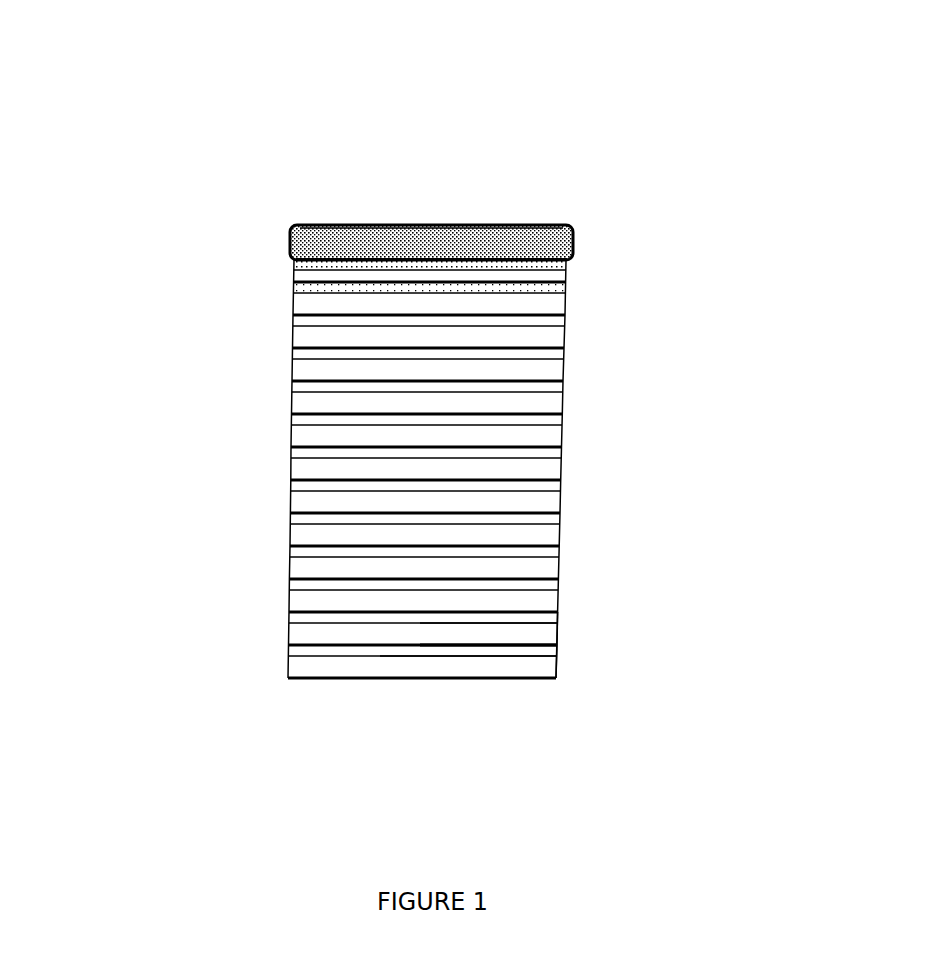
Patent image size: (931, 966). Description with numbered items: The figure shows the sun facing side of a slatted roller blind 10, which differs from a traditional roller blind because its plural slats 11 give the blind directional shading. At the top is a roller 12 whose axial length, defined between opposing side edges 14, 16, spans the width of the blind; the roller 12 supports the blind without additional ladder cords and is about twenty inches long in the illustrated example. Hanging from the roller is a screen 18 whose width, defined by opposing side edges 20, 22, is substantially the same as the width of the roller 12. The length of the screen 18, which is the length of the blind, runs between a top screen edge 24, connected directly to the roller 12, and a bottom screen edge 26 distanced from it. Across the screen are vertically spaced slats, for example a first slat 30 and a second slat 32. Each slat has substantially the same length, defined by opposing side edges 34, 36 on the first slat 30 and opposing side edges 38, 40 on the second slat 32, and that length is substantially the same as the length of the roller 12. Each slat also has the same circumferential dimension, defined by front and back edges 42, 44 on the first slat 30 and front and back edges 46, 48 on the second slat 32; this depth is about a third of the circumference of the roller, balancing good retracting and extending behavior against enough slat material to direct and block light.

The slatted roller blind 10 is at (428, 155).
The slats 11 is at (208, 442).
The roller 12 is at (283, 220).
The side edge of the roller 14 is at (288, 250).
The side edge of the roller 16 is at (588, 240).
The top screen edge 24 is at (575, 262).
The side edge of the screen 20 is at (283, 392).
The screen 18 is at (567, 363).
The side edge of the screen 22 is at (567, 393).
The side edge of the first slat 36 is at (283, 623).
The back edge of the second slat 48 is at (290, 645).
The side edge of the second slat 40 is at (287, 663).
The front edge of the second slat 46 is at (335, 676).
The second slat 32 is at (447, 663).
The back edge of the first slat 44 is at (477, 613).
The side edge of the first slat 34 is at (563, 630).
The front edge of the first slat 42 is at (553, 642).
The first slat 30 is at (448, 633).
The side edge of the second slat 38 is at (563, 668).
The bottom screen edge 26 is at (540, 683).